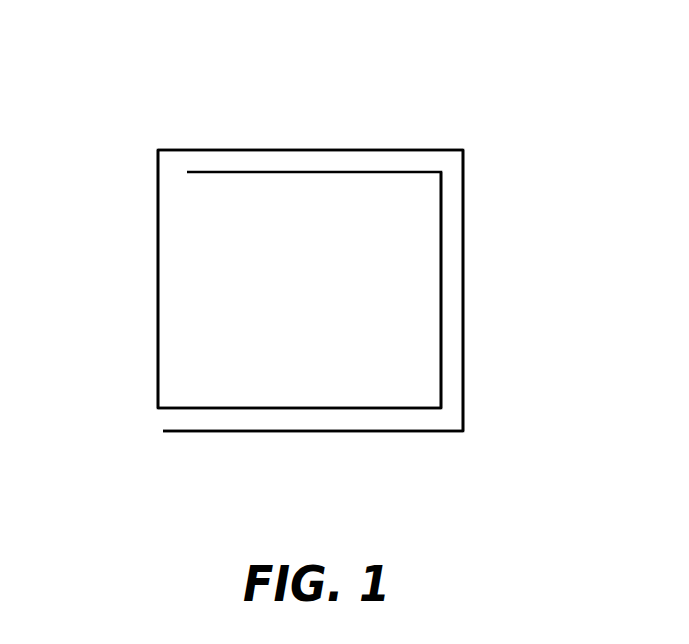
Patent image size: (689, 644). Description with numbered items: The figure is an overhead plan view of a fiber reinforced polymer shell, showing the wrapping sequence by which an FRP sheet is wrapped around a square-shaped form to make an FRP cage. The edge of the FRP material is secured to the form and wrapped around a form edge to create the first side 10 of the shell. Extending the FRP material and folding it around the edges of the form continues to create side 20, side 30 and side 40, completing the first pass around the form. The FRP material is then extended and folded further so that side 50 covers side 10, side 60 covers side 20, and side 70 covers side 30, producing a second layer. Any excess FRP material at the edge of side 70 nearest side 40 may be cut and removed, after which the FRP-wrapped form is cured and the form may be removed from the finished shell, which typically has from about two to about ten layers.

The first side 10 is at (275, 172).
The side 20 is at (441, 247).
The side 30 is at (278, 408).
The side 40 is at (158, 283).
The side 50 is at (358, 150).
The side 60 is at (463, 320).
The side 70 is at (377, 431).